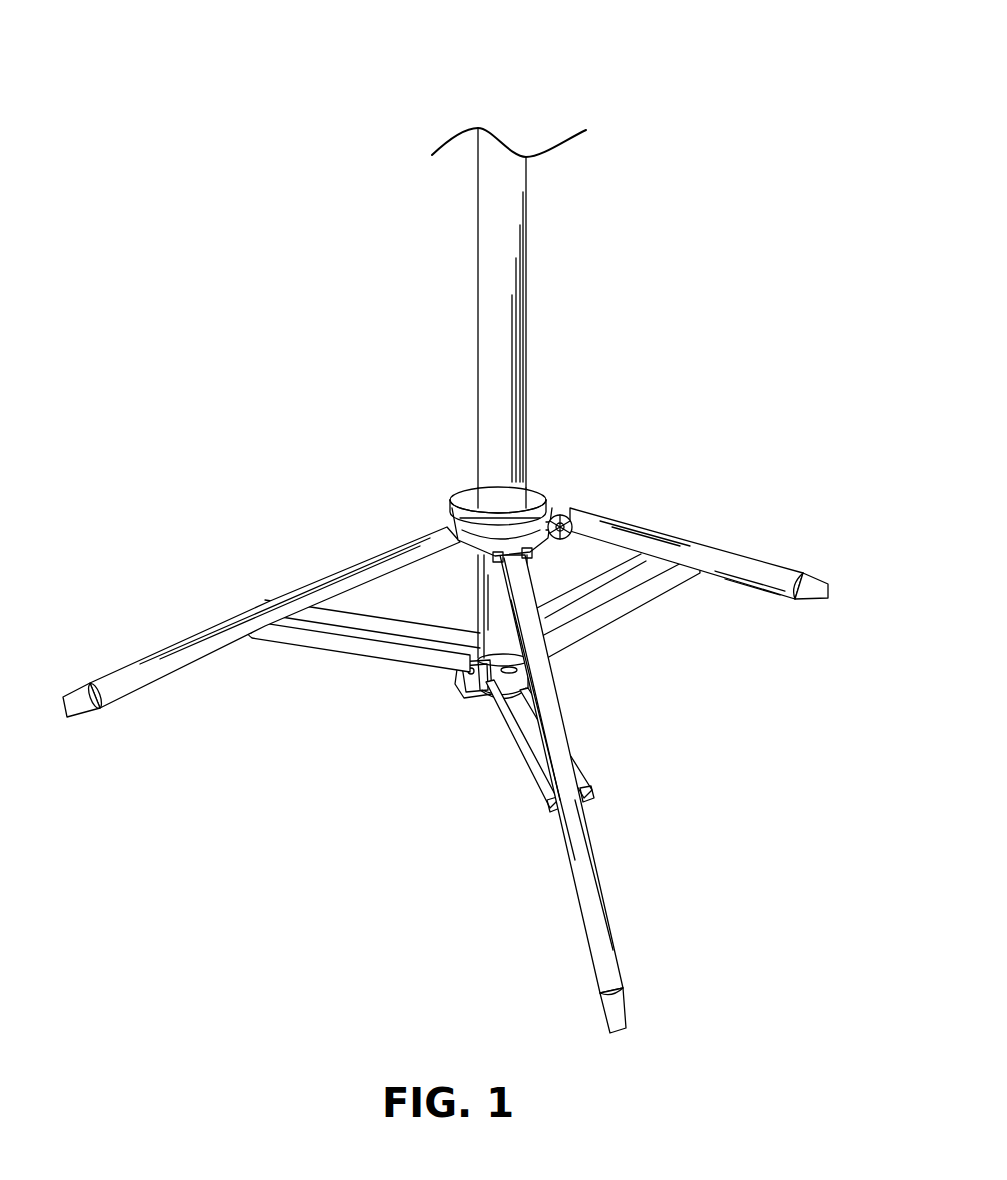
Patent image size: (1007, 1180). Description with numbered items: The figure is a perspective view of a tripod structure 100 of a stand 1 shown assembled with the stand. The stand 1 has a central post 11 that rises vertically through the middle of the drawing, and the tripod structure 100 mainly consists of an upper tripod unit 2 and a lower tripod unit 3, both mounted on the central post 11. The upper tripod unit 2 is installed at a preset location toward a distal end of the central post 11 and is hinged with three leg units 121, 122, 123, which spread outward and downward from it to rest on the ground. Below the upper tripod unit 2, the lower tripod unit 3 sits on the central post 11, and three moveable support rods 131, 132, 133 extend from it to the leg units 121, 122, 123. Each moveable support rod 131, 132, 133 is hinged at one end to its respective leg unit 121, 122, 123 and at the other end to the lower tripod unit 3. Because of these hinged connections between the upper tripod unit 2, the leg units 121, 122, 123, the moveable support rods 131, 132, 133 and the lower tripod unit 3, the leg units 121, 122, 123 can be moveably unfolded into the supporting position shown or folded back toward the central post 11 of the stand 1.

The stand 1 is at (698, 116).
The central post 11 is at (510, 303).
The tripod structure 100 is at (390, 398).
The upper tripod unit 2 is at (470, 497).
The lower tripod unit 3 is at (463, 667).
The leg unit 121 is at (737, 567).
The leg unit 122 is at (588, 888).
The leg unit 123 is at (173, 657).
The moveable support rod 131 is at (602, 617).
The moveable support rod 132 is at (517, 737).
The moveable support rod 133 is at (325, 643).